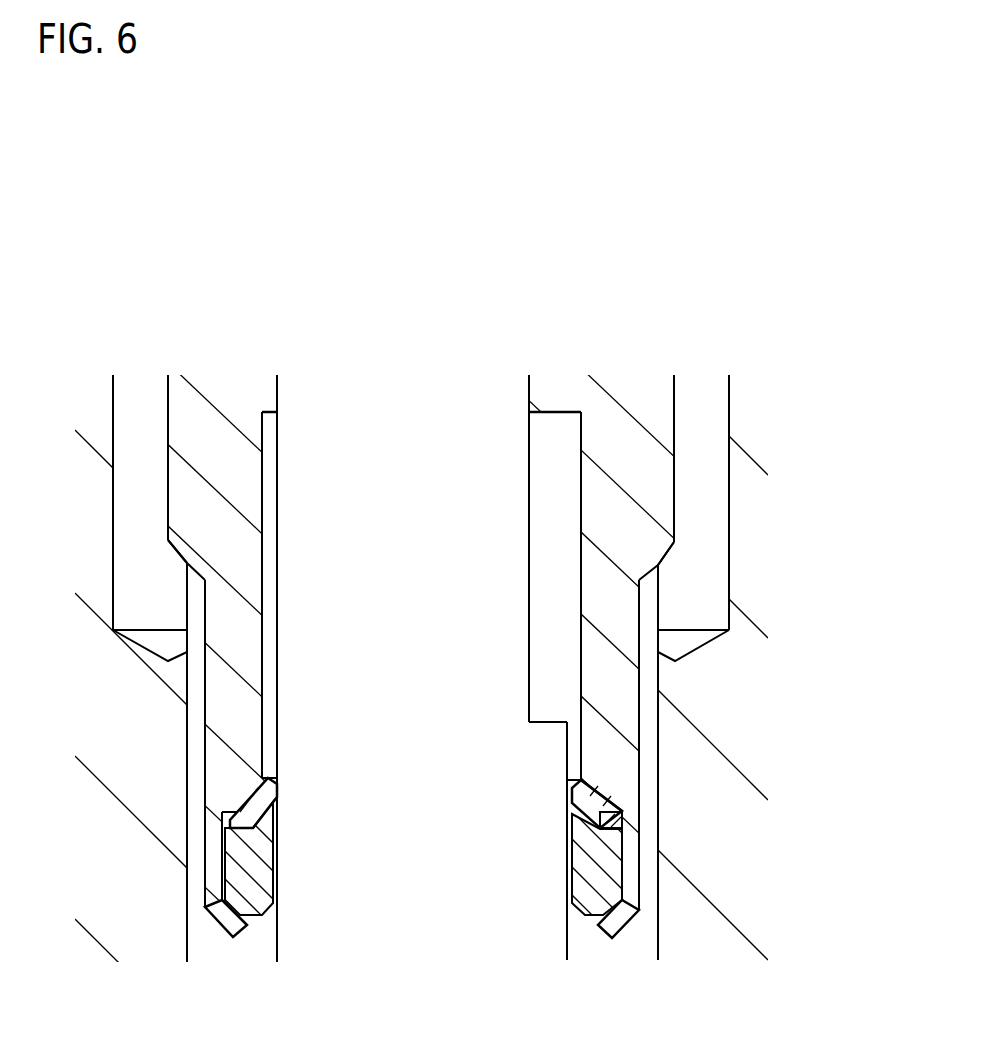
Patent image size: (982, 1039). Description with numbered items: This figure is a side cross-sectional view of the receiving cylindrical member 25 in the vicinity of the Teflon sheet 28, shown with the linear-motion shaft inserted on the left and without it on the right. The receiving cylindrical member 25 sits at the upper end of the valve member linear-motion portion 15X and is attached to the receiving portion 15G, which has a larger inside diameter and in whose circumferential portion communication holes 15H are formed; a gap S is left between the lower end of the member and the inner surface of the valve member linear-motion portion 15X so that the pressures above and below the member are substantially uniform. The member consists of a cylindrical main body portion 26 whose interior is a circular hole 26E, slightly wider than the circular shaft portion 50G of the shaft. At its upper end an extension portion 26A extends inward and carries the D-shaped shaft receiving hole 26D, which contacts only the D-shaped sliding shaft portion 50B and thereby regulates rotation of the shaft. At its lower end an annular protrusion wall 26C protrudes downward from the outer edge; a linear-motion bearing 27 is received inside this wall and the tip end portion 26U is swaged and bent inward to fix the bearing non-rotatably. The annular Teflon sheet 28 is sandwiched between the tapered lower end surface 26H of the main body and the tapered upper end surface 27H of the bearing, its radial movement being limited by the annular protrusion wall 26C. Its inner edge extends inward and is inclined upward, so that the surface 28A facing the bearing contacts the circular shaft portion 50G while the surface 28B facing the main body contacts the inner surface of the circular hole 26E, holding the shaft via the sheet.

The communication hole 15H is at (112, 496).
The receiving portion 15G is at (666, 455).
The valve member linear-motion portion 15X is at (215, 948).
The receiving cylindrical member 25 is at (200, 704).
The cylindrical main body portion 26 is at (230, 778).
The extension portion 26A is at (563, 390).
The annular protrusion wall 26C is at (633, 867).
The shaft receiving hole 26D is at (280, 404).
The circular hole 26E is at (590, 598).
The lower end surface 26H is at (587, 797).
The tip end portion 26U is at (618, 932).
The linear-motion bearing 27 is at (247, 860).
The upper end surface 27H is at (622, 820).
The Teflon sheet 28 is at (223, 819).
The surface 28A is at (567, 784).
The surface 28B is at (583, 783).
The sliding shaft portion 50B is at (330, 567).
The circular shaft portion 50G is at (363, 940).
The gap S is at (197, 668).